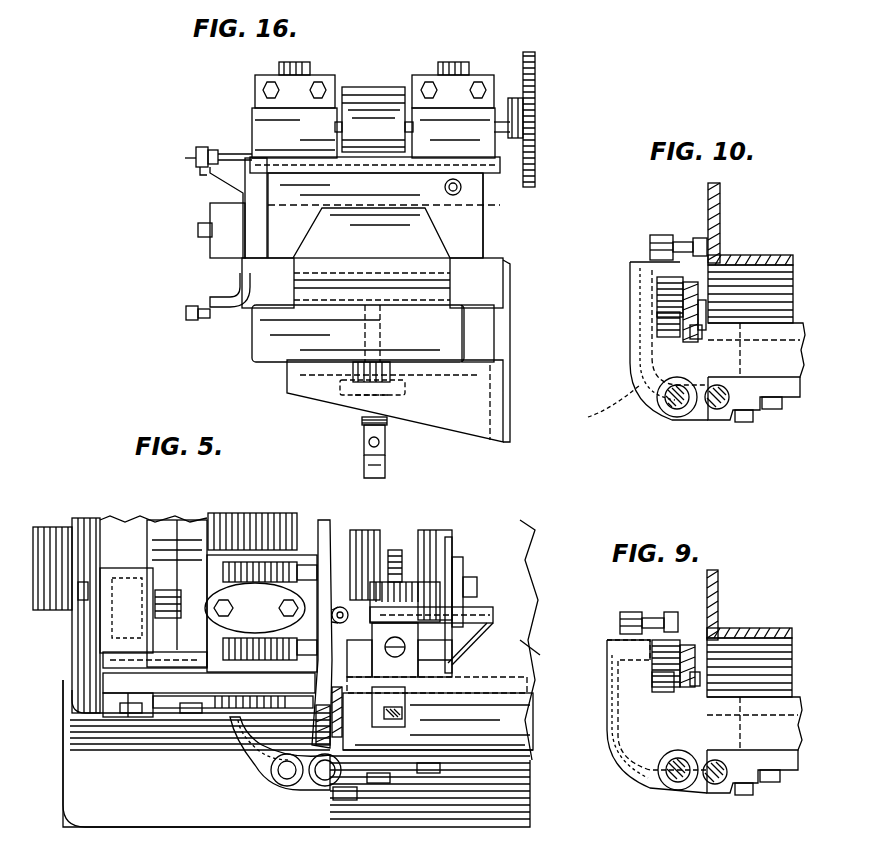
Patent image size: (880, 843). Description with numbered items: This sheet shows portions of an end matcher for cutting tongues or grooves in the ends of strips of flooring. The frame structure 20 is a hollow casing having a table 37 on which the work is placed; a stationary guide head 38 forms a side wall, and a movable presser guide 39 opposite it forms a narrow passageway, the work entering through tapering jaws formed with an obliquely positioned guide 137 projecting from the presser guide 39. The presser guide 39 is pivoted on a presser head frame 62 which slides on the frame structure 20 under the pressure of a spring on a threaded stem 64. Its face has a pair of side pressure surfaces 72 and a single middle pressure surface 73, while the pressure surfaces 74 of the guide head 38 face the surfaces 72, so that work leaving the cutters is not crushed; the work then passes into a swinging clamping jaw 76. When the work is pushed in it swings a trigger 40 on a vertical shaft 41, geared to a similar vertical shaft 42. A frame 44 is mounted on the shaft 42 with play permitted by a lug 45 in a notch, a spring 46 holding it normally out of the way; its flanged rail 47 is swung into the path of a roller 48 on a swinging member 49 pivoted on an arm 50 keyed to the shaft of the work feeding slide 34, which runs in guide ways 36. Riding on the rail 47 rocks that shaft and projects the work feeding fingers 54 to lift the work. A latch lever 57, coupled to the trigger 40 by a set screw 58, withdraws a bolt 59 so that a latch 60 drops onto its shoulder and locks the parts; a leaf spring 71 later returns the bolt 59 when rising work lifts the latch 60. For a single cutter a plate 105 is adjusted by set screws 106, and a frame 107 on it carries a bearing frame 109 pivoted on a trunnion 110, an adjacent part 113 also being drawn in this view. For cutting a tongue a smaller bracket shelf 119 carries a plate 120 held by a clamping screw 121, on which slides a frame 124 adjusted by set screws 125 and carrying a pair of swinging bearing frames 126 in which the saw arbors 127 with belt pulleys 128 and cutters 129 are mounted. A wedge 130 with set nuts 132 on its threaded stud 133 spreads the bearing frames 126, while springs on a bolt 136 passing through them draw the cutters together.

In FIG. 10, the frame structure 20 is at (721, 213).
In FIG. 9, the frame structure 20 is at (754, 682).
In FIG. 5, the frame structure 20 is at (522, 792).
In FIG. 5, the work feeding slide 34 is at (520, 757).
In FIG. 5, the guide ways 36 is at (450, 745).
In FIG. 5, the table 37 is at (520, 663).
In FIG. 5, the stationary guide head 38 is at (525, 726).
In FIG. 5, the presser guide 39 is at (437, 678).
In FIG. 5, the trigger 40 is at (345, 730).
In FIG. 10, the vertical shaft 41 is at (717, 410).
In FIG. 9, the vertical shaft 41 is at (715, 785).
In FIG. 5, the vertical shaft 41 is at (320, 775).
In FIG. 10, the vertical shaft 42 is at (677, 410).
In FIG. 9, the vertical shaft 42 is at (678, 783).
In FIG. 5, the vertical shaft 42 is at (284, 772).
In FIG. 10, the frame 44 is at (636, 343).
In FIG. 9, the frame 44 is at (620, 735).
In FIG. 5, the frame 44 is at (248, 752).
In FIG. 10, the lug 45 is at (662, 408).
In FIG. 9, the lug 45 is at (660, 778).
In FIG. 10, the spring 46 is at (609, 413).
In FIG. 10, the flanged rail 47 is at (655, 270).
In FIG. 9, the flanged rail 47 is at (612, 664).
In FIG. 5, the flanged rail 47 is at (590, 676).
In FIG. 10, the roller 48 is at (660, 282).
In FIG. 9, the roller 48 is at (668, 650).
In FIG. 10, the swinging member 49 is at (665, 330).
In FIG. 9, the swinging member 49 is at (665, 692).
In FIG. 10, the arm 50 is at (694, 340).
In FIG. 9, the arm 50 is at (694, 688).
In FIG. 5, the work feeding fingers 54 is at (405, 715).
In FIG. 5, the latch lever 57 is at (318, 680).
In FIG. 5, the set screw 58 is at (265, 758).
In FIG. 5, the bolt 59 is at (496, 612).
In FIG. 5, the latch 60 is at (452, 545).
In FIG. 5, the presser head frame 62 is at (430, 540).
In FIG. 5, the threaded stem 64 is at (395, 552).
In FIG. 5, the leaf spring 71 is at (326, 538).
In FIG. 5, the pressure surfaces 72 is at (373, 665).
In FIG. 5, the pressure surface 73 is at (400, 686).
In FIG. 5, the pressure surfaces 74 is at (440, 741).
In FIG. 5, the swinging clamping jaw 76 is at (465, 570).
In FIG. 5, the plate 105 is at (117, 575).
In FIG. 5, the set screws 106 is at (80, 605).
In FIG. 5, the frame 107 is at (165, 528).
In FIG. 5, the bearing frame 109 is at (210, 645).
In FIG. 5, the trunnion 110 is at (156, 605).
In FIG. 5, the clamp plate 113 is at (252, 538).
In FIG. 16, the bracket shelf 119 is at (498, 330).
In FIG. 16, the plate 120 is at (266, 348).
In FIG. 16, the clamping screw 121 is at (388, 455).
In FIG. 16, the frame 124 is at (218, 290).
In FIG. 16, the frame 125 is at (204, 320).
In FIG. 16, the swinging bearing frames 126 is at (256, 91).
In FIG. 16, the saw arbors 127 is at (496, 115).
In FIG. 16, the belt pulleys 128 is at (370, 95).
In FIG. 16, the cutters 129 is at (536, 76).
In FIG. 16, the wedge 130 is at (300, 156).
In FIG. 16, the set nuts 132 is at (196, 162).
In FIG. 16, the threaded stud 133 is at (243, 152).
In FIG. 16, the bolt 136 is at (462, 187).
In FIG. 5, the oblique guide 137 is at (455, 665).